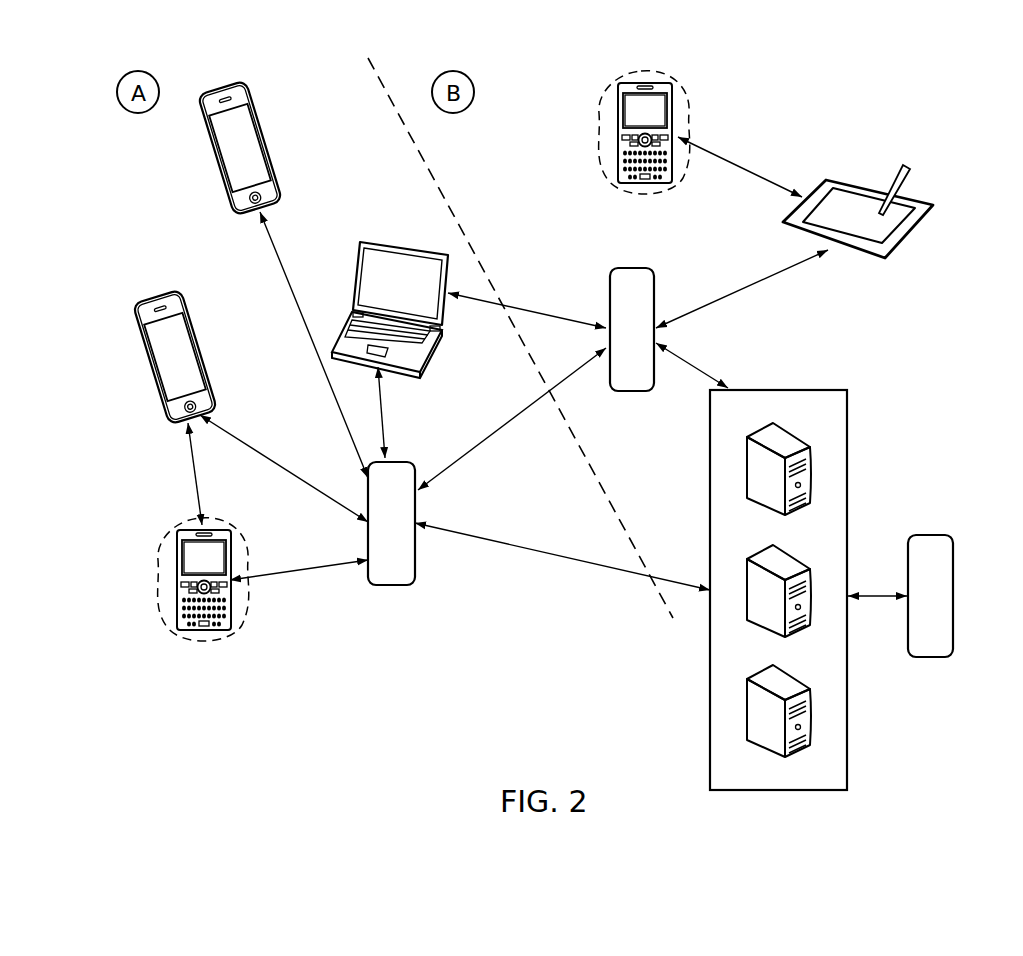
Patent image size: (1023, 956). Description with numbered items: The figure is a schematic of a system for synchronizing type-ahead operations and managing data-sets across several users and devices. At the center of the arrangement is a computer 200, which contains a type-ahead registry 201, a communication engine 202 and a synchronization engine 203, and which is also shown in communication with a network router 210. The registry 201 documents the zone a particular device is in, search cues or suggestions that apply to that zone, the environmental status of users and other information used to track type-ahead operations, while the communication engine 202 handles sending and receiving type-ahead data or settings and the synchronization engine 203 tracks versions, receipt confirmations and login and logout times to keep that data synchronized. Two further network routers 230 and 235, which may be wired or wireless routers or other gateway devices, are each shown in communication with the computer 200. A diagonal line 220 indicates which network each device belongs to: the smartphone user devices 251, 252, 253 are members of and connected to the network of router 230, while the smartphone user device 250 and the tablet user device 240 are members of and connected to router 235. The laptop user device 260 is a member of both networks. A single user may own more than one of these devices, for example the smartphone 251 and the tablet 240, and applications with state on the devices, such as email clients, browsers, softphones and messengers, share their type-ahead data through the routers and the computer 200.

The computer 200 is at (848, 412).
The type-ahead registry 201 is at (812, 482).
The communication engine 202 is at (812, 592).
The synchronization engine 203 is at (812, 718).
The network router 210 is at (955, 563).
The diagonal line 220 is at (612, 508).
The network router 230 is at (416, 556).
The network router 235 is at (655, 290).
The user device 240 is at (920, 235).
The user device 250 is at (675, 112).
The user device 251 is at (263, 145).
The user device 252 is at (197, 352).
The user device 253 is at (232, 560).
The user device 260 is at (440, 350).